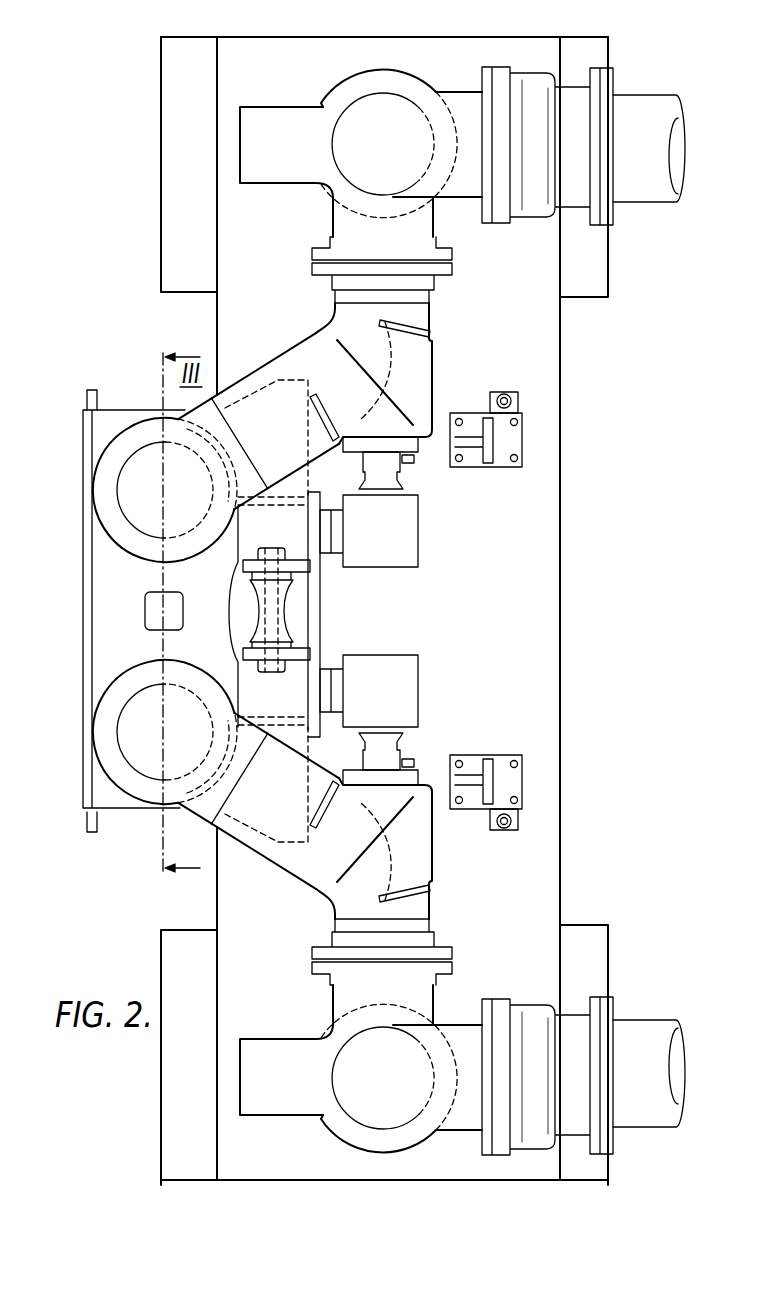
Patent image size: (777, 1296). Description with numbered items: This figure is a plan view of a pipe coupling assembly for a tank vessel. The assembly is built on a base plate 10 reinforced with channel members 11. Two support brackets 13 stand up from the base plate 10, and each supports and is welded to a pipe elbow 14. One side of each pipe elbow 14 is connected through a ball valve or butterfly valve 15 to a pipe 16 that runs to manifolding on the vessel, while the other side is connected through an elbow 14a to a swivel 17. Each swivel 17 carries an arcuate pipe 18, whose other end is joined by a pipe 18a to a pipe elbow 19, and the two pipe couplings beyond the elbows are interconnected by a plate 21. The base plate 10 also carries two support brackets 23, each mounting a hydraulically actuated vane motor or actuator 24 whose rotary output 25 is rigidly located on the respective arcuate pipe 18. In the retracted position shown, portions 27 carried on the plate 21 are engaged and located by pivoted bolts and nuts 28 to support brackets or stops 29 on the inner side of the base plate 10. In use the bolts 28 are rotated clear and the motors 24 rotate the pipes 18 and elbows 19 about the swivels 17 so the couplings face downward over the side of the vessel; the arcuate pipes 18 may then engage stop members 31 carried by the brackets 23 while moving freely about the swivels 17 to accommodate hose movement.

The base plate 10 is at (247, 1162).
The channel members 11 is at (161, 271).
The support brackets 13 is at (278, 155).
The pipe elbow 14 is at (458, 186).
The elbow 14a is at (365, 153).
The ball valve or butterfly valve 15 is at (518, 161).
The pipe 16 is at (630, 161).
The swivel 17 is at (443, 270).
The arcuate pipe 18 is at (345, 334).
The pipe 18a is at (290, 374).
The pipe elbow 19 is at (169, 504).
The plate 21 is at (100, 626).
The support brackets 23 is at (312, 563).
The hydraulically actuated vane motor or actuator 24 is at (402, 540).
The rotary outputs 25 is at (388, 477).
The portions 27 is at (95, 390).
The pivoted bolts and nuts 28 is at (507, 392).
The support brackets or stops 29 is at (500, 447).
The stop members 31 is at (266, 362).